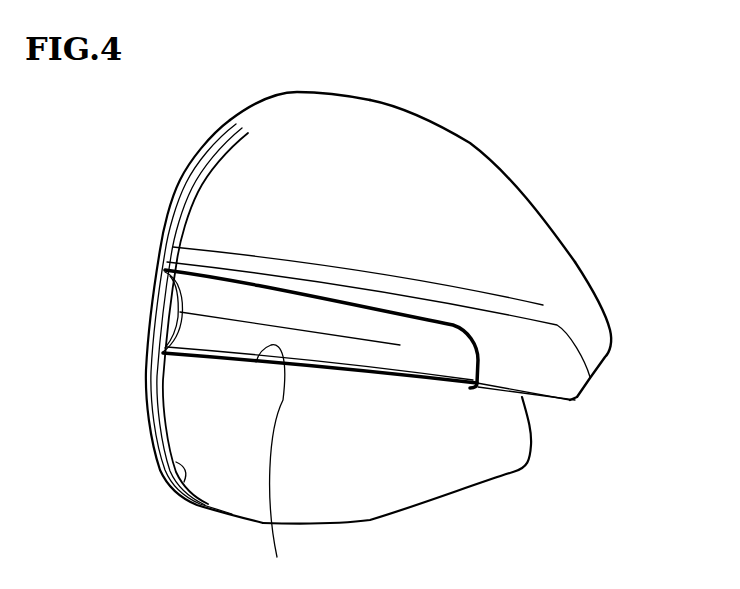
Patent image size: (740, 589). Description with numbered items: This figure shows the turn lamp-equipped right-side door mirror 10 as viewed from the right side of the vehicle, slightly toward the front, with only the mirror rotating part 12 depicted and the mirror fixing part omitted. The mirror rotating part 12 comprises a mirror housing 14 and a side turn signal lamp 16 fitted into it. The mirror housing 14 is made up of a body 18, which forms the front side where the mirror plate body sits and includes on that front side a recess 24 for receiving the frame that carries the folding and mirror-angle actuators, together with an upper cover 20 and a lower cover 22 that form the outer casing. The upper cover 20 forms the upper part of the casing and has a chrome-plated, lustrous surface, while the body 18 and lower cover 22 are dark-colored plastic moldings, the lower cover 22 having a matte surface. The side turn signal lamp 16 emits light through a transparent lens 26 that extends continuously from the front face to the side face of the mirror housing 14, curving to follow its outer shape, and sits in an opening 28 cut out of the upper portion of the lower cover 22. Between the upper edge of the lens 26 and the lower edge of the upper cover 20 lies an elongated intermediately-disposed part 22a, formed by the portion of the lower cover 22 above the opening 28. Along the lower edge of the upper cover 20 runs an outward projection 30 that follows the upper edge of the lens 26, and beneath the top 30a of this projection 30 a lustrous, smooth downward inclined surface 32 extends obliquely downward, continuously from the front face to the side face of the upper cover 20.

The door mirror 10 is at (632, 80).
The mirror rotating part 12 is at (593, 212).
The mirror housing 14 is at (413, 137).
The side turn signal lamp 16 is at (243, 337).
The body (visor) 18 is at (153, 231).
The upper cover 20 is at (302, 120).
The lower cover 22 is at (393, 468).
The intermediately-disposed part 22a is at (175, 290).
The recess 24 is at (200, 223).
The lens 26 is at (202, 331).
The opening 28 is at (274, 466).
The projection (ridge) 30 is at (222, 243).
The top of the projection 30a is at (255, 250).
The downward inclined surface 32 is at (228, 259).